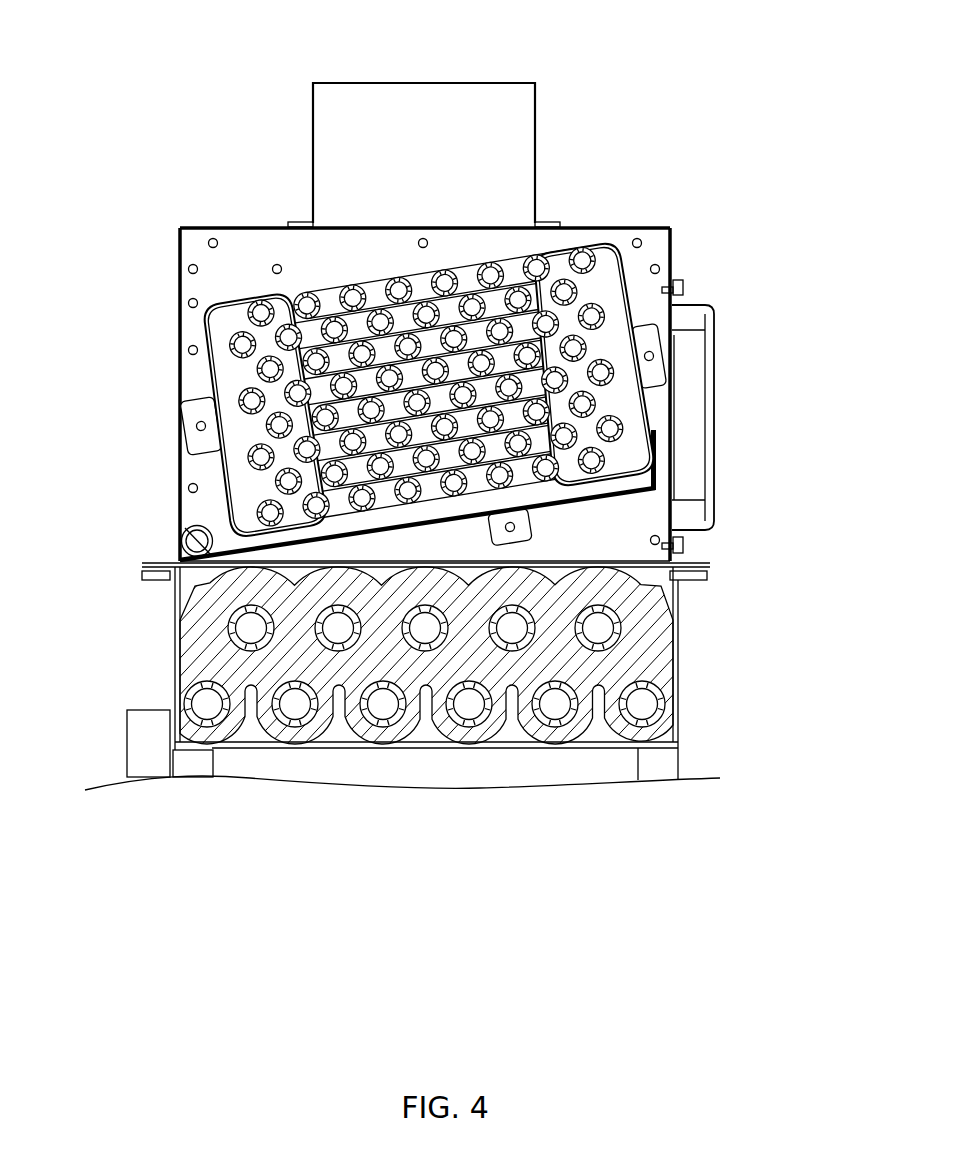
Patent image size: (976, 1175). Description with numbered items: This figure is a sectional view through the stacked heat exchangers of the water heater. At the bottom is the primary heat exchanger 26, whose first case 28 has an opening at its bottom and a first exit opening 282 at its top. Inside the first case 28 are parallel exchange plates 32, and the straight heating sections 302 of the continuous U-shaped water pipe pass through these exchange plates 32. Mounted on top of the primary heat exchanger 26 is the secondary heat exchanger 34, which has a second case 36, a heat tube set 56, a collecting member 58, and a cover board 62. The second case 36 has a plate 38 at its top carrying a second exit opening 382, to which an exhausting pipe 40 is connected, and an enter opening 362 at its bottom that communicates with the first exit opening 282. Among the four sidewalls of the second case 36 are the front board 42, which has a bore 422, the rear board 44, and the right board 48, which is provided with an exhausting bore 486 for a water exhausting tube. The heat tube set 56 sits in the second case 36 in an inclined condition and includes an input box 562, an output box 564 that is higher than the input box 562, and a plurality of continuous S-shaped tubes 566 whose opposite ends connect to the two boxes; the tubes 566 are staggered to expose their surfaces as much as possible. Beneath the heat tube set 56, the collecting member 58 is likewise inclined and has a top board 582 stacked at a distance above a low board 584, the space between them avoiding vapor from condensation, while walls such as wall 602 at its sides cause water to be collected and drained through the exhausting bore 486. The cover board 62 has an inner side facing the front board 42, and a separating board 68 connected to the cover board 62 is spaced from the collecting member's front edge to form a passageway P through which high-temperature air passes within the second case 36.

The primary heat exchanger 26 is at (140, 670).
The first case 28 is at (178, 601).
The exchange plates 32 is at (188, 667).
The secondary heat exchanger 34 is at (148, 295).
The second case 36 is at (175, 222).
The plate 38 is at (232, 225).
The exhausting pipe 40 is at (537, 97).
The front board 42 is at (672, 248).
The rear board 44 is at (178, 328).
The right board 48 is at (270, 243).
The heat tube set 56 is at (331, 255).
The collecting member 58 is at (80, 397).
The cover board 62 is at (714, 326).
The separating board 68 is at (708, 428).
The first exit opening 282 is at (678, 585).
The heating sections 302 is at (618, 633).
The enter opening 362 is at (303, 558).
The second exit opening 382 is at (508, 226).
The bore 422 is at (676, 368).
The exhausting bore 486 is at (190, 545).
The input box 562 is at (240, 302).
The output box 564 is at (612, 250).
The S-shaped tubes 566 is at (440, 265).
The top board 582 is at (226, 500).
The low board 584 is at (200, 538).
The wall 602 is at (658, 457).
The passageway P is at (690, 482).